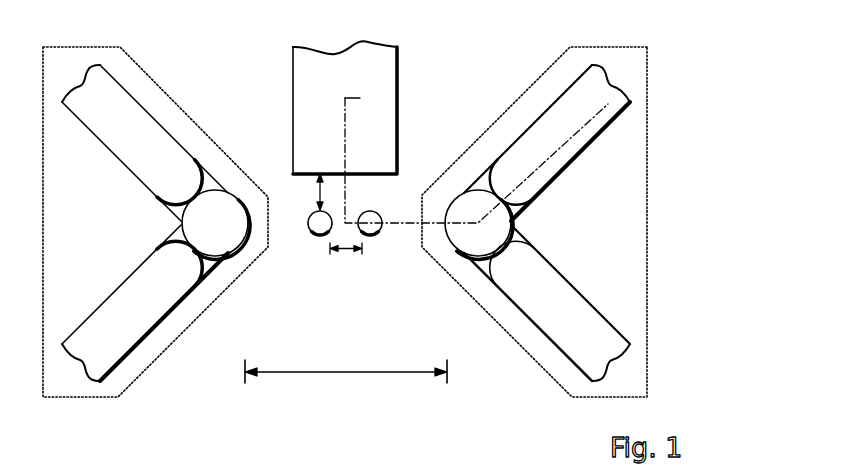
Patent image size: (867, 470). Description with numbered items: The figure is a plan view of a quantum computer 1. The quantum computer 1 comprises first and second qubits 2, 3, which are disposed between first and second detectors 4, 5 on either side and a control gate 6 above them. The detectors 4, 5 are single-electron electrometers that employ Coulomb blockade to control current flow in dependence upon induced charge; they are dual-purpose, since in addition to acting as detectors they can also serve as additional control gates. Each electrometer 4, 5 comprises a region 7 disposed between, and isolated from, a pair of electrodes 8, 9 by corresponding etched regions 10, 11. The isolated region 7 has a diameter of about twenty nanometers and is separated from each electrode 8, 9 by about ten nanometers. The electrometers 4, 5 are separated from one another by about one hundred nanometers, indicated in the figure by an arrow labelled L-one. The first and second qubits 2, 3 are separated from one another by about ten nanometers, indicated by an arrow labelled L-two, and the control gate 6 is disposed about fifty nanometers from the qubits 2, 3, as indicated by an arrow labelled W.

The quantum computer 1 is at (680, 336).
The first qubit 2 is at (377, 234).
The second qubit 3 is at (313, 234).
The first detector 4 is at (648, 72).
The second detector 5 is at (145, 72).
The control gate 6 is at (370, 72).
The region 7 is at (513, 223).
The electrode 8 is at (535, 170).
The electrode 9 is at (558, 300).
The etched region 10 is at (499, 252).
The etched region 11 is at (485, 192).